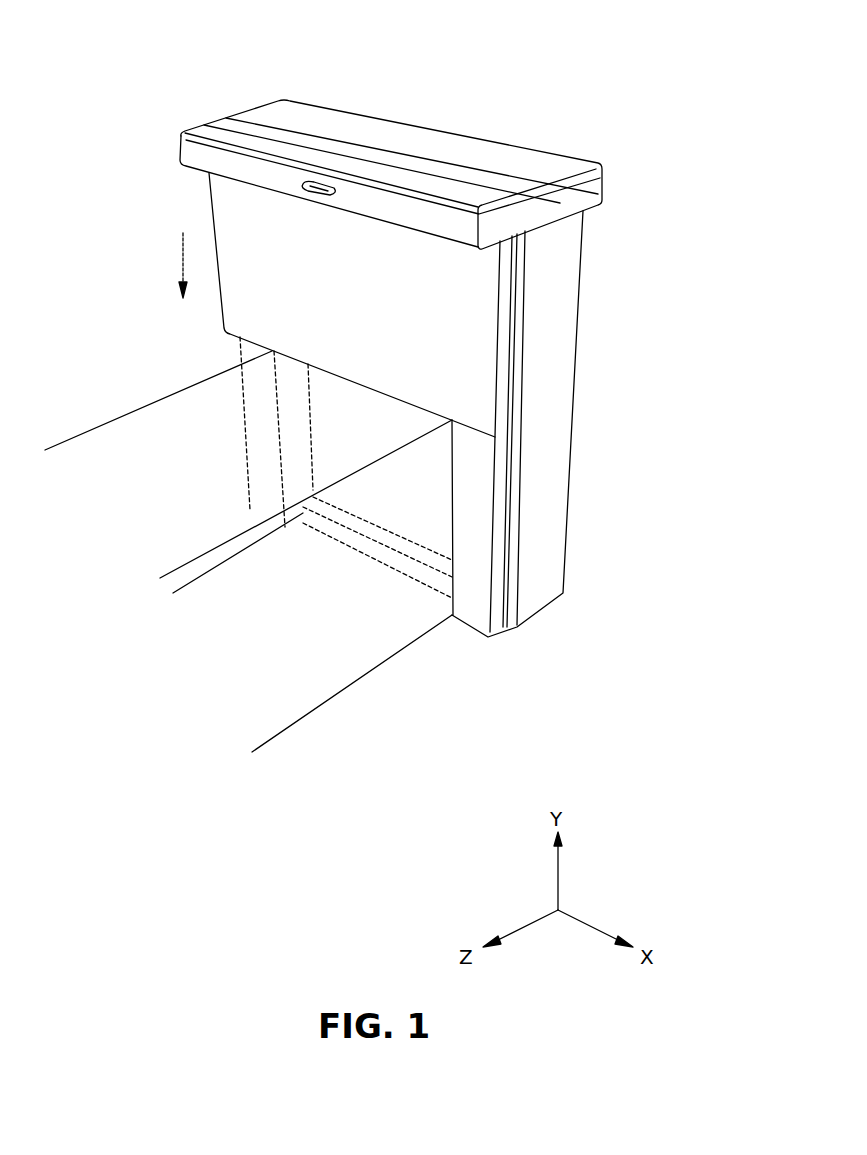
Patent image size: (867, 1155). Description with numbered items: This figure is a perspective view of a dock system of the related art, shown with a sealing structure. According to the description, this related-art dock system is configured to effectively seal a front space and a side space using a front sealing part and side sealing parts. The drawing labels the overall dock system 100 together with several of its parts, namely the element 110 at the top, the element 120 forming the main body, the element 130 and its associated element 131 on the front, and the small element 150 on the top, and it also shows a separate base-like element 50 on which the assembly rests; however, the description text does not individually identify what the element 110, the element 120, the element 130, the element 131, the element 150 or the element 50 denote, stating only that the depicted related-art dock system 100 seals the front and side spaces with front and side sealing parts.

The storage apparatus 100 is at (606, 149).
The upper cover 110 is at (430, 145).
The body housing 120 is at (560, 370).
The door 130 is at (183, 163).
The door panel 131 is at (232, 212).
The latch 150 is at (306, 182).
The mounting rail 50 is at (315, 683).